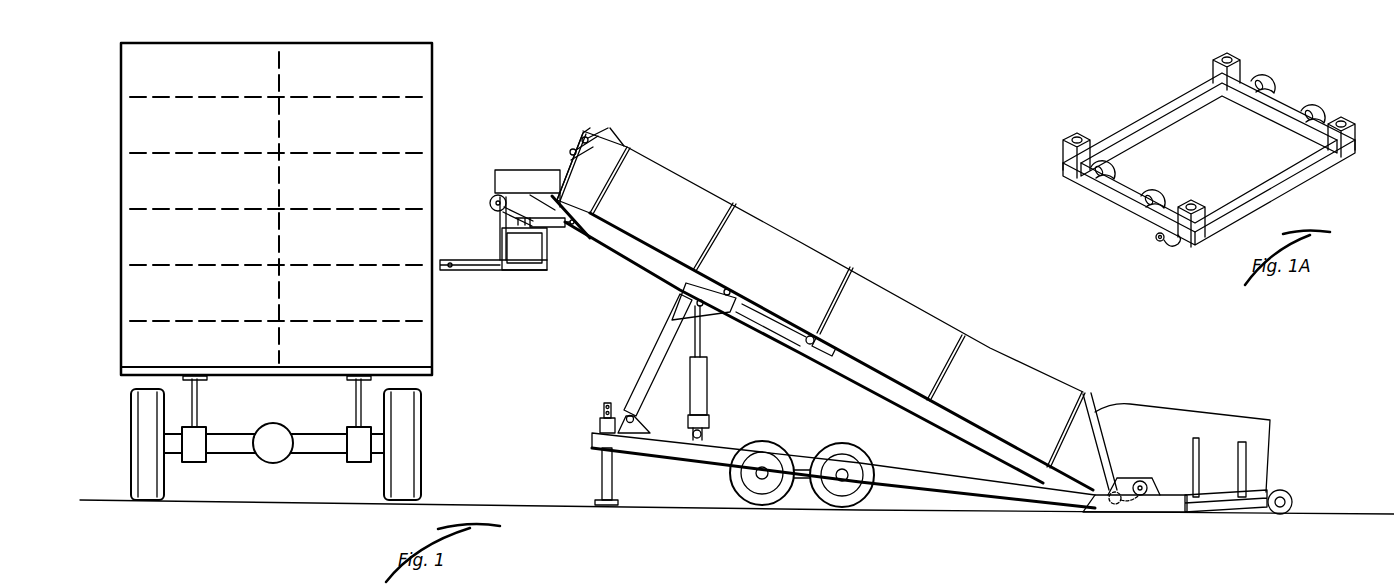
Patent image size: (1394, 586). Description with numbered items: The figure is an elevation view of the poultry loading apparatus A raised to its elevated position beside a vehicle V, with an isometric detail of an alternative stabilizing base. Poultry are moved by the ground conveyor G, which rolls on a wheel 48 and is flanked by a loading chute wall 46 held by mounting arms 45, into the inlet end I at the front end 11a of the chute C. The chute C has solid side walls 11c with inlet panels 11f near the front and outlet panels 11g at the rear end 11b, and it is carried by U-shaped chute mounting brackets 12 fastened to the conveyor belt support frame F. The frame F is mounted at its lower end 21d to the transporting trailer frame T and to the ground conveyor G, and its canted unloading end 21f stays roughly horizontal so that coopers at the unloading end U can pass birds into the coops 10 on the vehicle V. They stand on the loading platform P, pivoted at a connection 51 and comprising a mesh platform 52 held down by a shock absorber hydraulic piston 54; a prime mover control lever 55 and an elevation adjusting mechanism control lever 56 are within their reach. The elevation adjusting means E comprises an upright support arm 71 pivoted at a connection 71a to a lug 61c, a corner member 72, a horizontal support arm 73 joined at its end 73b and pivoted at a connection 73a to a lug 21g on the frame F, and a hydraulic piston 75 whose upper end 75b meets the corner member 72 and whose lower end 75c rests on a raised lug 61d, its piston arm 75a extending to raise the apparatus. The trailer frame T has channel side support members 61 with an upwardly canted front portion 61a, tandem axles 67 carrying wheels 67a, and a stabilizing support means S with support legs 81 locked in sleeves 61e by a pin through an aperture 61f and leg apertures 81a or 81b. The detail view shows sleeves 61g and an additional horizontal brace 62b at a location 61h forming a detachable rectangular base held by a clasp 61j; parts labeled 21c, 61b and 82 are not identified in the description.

In FIG. 1, the coops 10 is at (128, 226).
In FIG. 1, the vehicle V is at (441, 355).
In FIG. 1, the chute C is at (800, 229).
In FIG. 1, the conveyor belt support frame F is at (893, 378).
In FIG. 1, the elevation adjusting means E is at (645, 354).
In FIG. 1, the stabilizing support means S is at (565, 453).
In FIG. 1, the transporting trailer frame T is at (1016, 505).
In FIG. 1, the poultry loading apparatus A is at (1012, 323).
In FIG. 1, the inlet end I is at (1185, 384).
In FIG. 1, the ground conveyor G is at (1279, 481).
In FIG. 1, the loading platform P is at (510, 284).
In FIG. 1, the unloading end U is at (560, 95).
In FIG. 1, the front end of chute 11a is at (1115, 400).
In FIG. 1, the rear end of chute 11b is at (561, 155).
In FIG. 1, the side walls 11c is at (990, 390).
In FIG. 1, the inlet panels 11f is at (1056, 430).
In FIG. 1, the outlet panels 11g is at (494, 182).
In FIG. 1, the U-shaped chute mounting brackets 12 is at (626, 145).
In FIG. 1, the conveyor rail 21c is at (594, 208).
In FIG. 1, the lower end of side support frame 21d is at (1108, 508).
In FIG. 1, the unloading end of side support frame 21f is at (528, 195).
In FIG. 1, the lug 21g is at (837, 345).
In FIG. 1, the mounting arms 45 is at (1200, 452).
In FIG. 1, the loading chute wall 46 is at (1152, 440).
In FIG. 1, the wheel 48 is at (1292, 497).
In FIG. 1, the connection 51 is at (489, 204).
In FIG. 1, the platform 52 is at (534, 270).
In FIG. 1, the shock absorber hydraulic piston 54 is at (566, 232).
In FIG. 1, the prime mover control lever 55 is at (573, 148).
In FIG. 1, the elevation adjusting mechanism control lever 56 is at (587, 137).
In FIG. 1, the side support members 61 is at (892, 470).
In FIG. 1A, the side support members 61 is at (1064, 170).
In FIG. 1, the front portion of channel member 61a is at (1160, 513).
In FIG. 1, the frame member 61b is at (722, 445).
In FIG. 1, the lug 61c is at (640, 425).
In FIG. 1A, the lug 61c is at (1090, 178).
In FIG. 1, the raised lug 61d is at (710, 435).
In FIG. 1, the sleeve 61e is at (599, 424).
In FIG. 1A, the sleeve 61e is at (1064, 142).
In FIG. 1, the aperture 61f is at (603, 410).
In FIG. 1A, the sleeves 61g is at (1188, 202).
In FIG. 1A, the location 61h is at (1168, 245).
In FIG. 1A, the clasp 61j is at (1155, 238).
In FIG. 1A, the additional horizontal brace 62b is at (1320, 173).
In FIG. 1, the axles 67 is at (766, 470).
In FIG. 1, the wheels 67a is at (835, 506).
In FIG. 1, the upright support arm 71 is at (665, 325).
In FIG. 1, the connection 71a is at (624, 405).
In FIG. 1, the corner member 72 is at (680, 310).
In FIG. 1, the horizontal support arm 73 is at (768, 303).
In FIG. 1, the connection 73a is at (810, 336).
In FIG. 1, the end of horizontal support arm 73b is at (728, 289).
In FIG. 1, the hydraulic piston 75 is at (709, 368).
In FIG. 1, the piston arm 75a is at (703, 345).
In FIG. 1, the upper end of piston 75b is at (697, 303).
In FIG. 1, the lower end of piston 75c is at (694, 440).
In FIG. 1, the support legs 81 is at (602, 482).
In FIG. 1, the first aperture 81a is at (602, 472).
In FIG. 1, the upper apertures 81b is at (604, 405).
In FIG. 1, the foot plate 82 is at (616, 500).